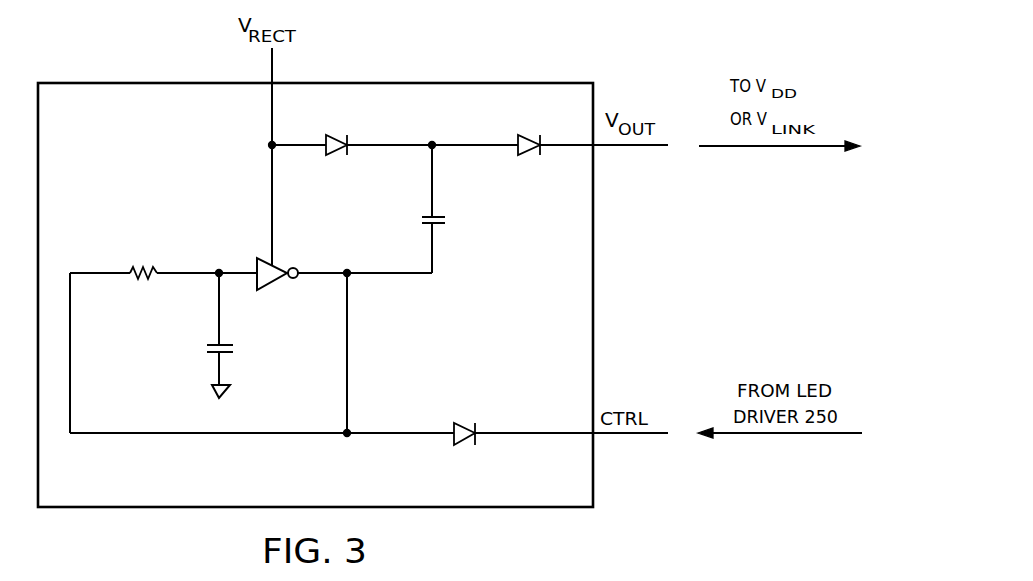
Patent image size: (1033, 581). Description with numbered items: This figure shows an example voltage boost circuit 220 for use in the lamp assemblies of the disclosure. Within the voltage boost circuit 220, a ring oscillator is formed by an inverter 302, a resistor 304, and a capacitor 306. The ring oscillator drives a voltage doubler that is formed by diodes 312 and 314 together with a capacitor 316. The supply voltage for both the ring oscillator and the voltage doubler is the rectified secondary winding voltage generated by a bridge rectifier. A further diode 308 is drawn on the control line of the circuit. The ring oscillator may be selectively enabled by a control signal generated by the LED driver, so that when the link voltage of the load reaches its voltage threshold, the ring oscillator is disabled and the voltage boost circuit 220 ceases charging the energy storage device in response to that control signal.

The voltage boost circuit 220 is at (166, 81).
The inverter 302 is at (274, 286).
The resistor 304 is at (147, 268).
The capacitor 306 is at (235, 350).
The diode Dx 308 is at (467, 447).
The diode 312 is at (338, 157).
The diode 314 is at (530, 157).
The capacitor 316 is at (446, 221).